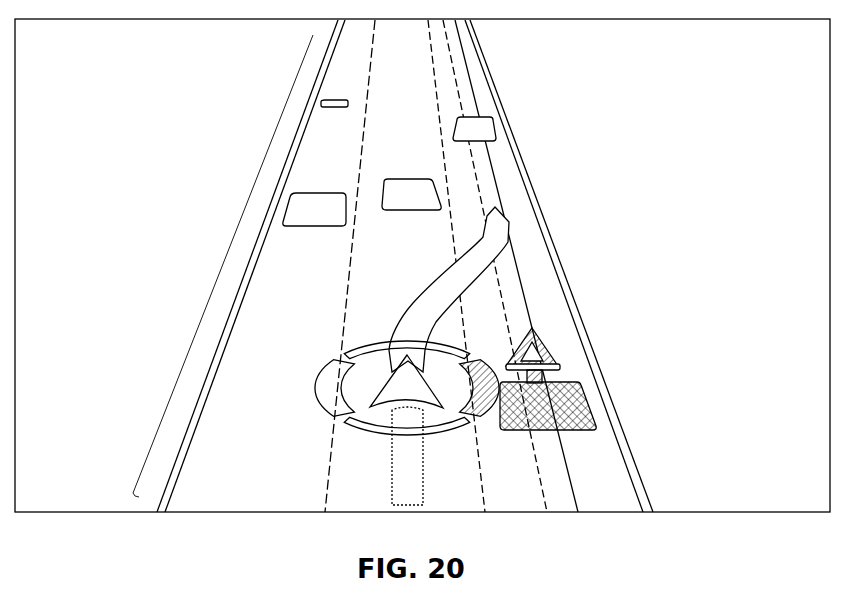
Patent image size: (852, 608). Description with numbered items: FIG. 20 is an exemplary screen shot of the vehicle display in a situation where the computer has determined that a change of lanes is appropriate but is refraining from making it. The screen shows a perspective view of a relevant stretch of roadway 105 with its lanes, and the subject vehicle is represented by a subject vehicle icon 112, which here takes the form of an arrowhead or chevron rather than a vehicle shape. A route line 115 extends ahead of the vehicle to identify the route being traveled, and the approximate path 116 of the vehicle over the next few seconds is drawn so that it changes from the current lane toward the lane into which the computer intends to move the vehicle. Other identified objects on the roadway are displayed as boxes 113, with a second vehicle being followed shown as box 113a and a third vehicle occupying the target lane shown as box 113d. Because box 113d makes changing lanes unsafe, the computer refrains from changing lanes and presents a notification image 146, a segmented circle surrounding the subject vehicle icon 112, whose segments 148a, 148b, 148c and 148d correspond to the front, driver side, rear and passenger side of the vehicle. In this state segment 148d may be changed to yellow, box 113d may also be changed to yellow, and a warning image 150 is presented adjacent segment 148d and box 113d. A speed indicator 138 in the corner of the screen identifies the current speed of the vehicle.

The roadway 105 is at (222, 259).
The subject vehicle icon 112 is at (410, 390).
The box 113 is at (328, 110).
The box 113a is at (393, 197).
The box 113d is at (570, 398).
The route line 115 is at (462, 55).
The path 116 is at (493, 233).
The speed indicator 138 is at (797, 103).
The notification image 146 is at (452, 392).
The segment 148a is at (367, 343).
The segment 148b is at (313, 385).
The segment 148c is at (443, 433).
The segment 148d is at (493, 407).
The warning image 150 is at (548, 343).